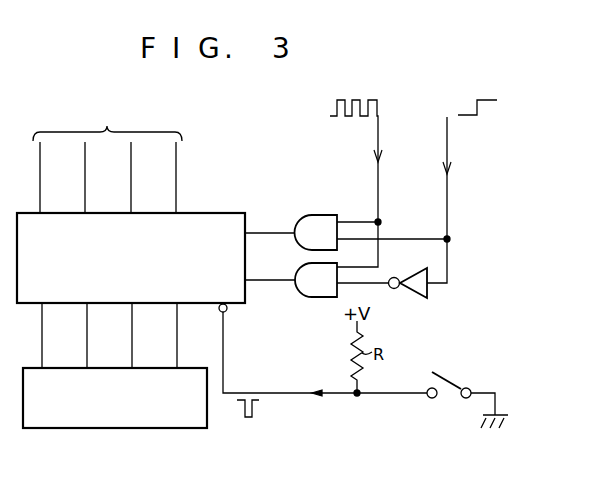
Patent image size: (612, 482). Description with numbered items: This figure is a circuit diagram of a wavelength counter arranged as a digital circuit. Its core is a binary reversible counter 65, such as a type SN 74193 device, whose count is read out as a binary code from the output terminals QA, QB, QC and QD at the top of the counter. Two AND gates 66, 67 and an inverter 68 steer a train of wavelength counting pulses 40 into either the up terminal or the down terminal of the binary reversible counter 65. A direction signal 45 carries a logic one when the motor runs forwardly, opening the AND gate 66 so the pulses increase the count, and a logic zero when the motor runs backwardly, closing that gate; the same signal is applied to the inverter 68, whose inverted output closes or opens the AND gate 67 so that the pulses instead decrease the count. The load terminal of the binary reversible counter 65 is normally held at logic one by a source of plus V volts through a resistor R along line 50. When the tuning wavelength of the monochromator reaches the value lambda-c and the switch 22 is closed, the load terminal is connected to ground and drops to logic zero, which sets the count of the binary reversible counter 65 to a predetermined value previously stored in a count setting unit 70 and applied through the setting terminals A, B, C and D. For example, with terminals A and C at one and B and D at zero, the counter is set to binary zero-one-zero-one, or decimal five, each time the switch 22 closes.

The binary reversible counter 65 is at (205, 213).
The count setting unit 70 is at (142, 428).
The AND gate 66 is at (322, 215).
The AND gate 67 is at (297, 265).
The inverter 68 is at (428, 292).
The wavelength counting pulses 40 is at (376, 146).
The direction signal 45 is at (449, 148).
The load line 50 is at (292, 394).
The switch 22 is at (447, 381).